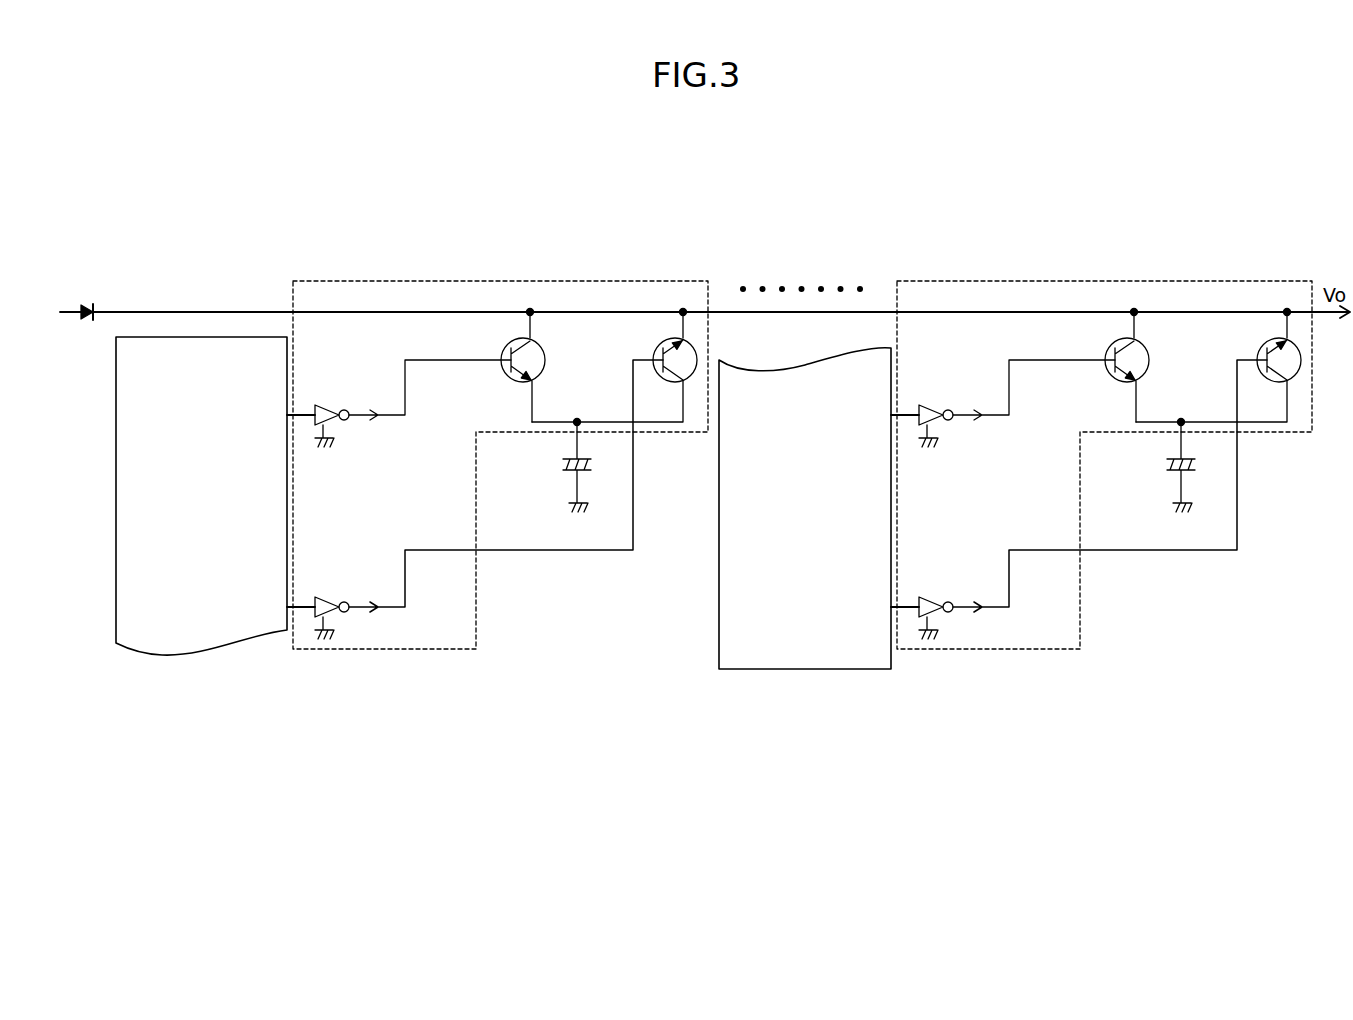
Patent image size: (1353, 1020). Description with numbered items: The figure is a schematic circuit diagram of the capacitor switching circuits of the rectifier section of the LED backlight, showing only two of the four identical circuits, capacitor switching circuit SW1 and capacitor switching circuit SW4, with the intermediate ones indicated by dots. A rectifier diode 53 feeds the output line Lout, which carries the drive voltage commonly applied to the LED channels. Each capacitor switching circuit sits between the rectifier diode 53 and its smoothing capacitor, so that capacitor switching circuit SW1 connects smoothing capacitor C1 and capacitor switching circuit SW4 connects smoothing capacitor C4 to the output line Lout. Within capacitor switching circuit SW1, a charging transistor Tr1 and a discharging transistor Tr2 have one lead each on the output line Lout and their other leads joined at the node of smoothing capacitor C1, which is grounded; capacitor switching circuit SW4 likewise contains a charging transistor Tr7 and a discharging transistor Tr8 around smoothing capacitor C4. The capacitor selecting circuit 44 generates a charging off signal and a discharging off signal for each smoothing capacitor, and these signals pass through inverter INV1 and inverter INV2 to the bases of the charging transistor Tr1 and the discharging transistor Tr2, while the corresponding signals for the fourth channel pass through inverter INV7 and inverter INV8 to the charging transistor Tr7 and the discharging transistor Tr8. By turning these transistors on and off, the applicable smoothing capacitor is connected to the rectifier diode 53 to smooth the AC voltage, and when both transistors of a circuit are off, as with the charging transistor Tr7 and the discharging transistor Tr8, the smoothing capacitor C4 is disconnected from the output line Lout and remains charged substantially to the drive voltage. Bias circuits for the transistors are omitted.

The rectifier diode 53 is at (88, 307).
The capacitor selecting circuit 44 is at (116, 612).
The output line Lout is at (217, 309).
The capacitor switching circuit SW1 is at (542, 281).
The capacitor switching circuit SW4 is at (1104, 428).
The inverter INV1 is at (399, 403).
The inverter INV2 is at (475, 499).
The inverter INV7 is at (1003, 403).
The inverter INV8 is at (1079, 499).
The charging transistor Tr1 is at (517, 366).
The discharging transistor Tr2 is at (614, 366).
The charging transistor Tr7 is at (1121, 366).
The discharging transistor Tr8 is at (1218, 366).
The smoothing capacitor C1 is at (568, 466).
The smoothing capacitor C4 is at (1172, 466).